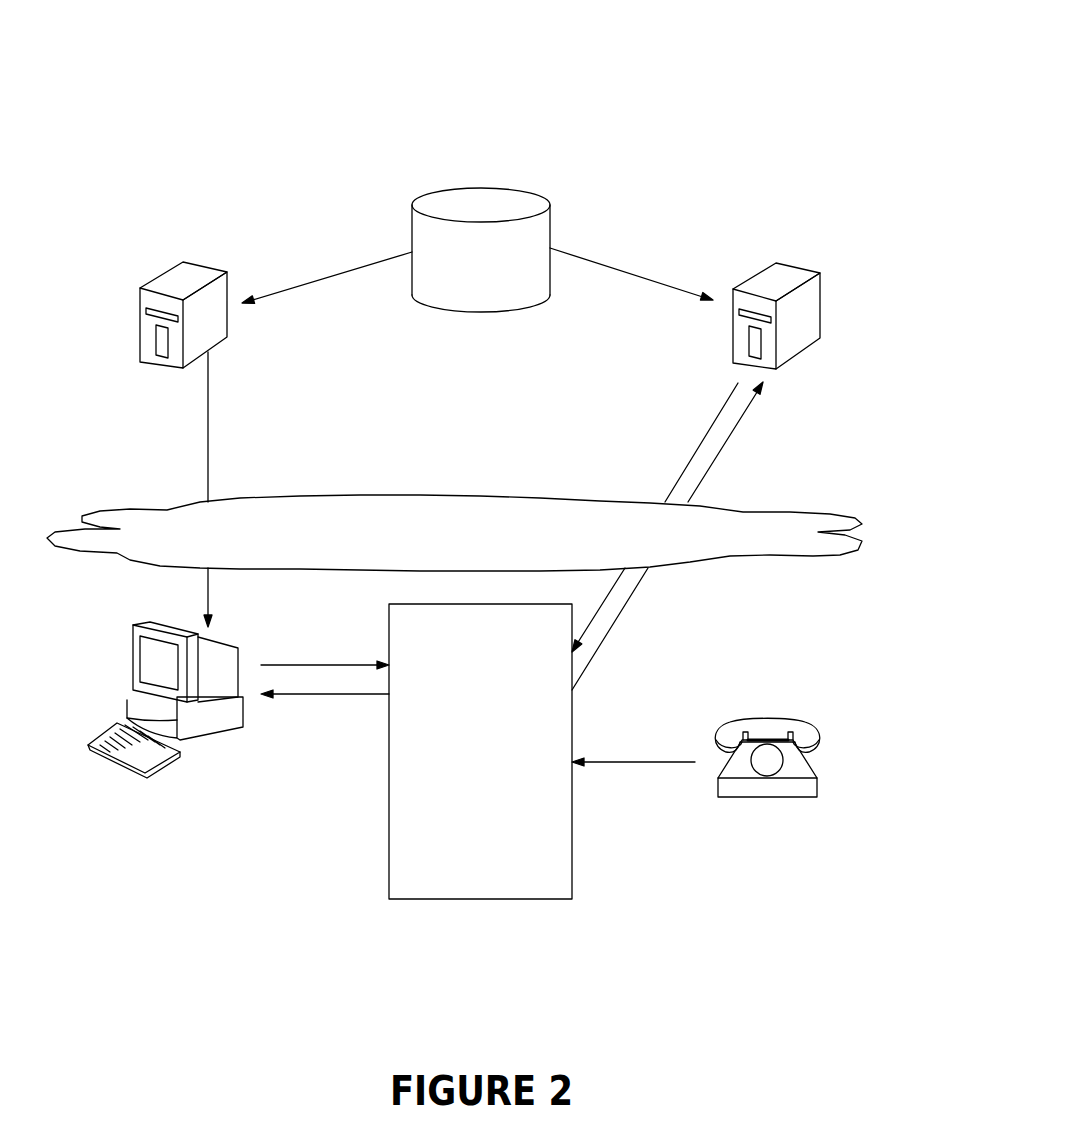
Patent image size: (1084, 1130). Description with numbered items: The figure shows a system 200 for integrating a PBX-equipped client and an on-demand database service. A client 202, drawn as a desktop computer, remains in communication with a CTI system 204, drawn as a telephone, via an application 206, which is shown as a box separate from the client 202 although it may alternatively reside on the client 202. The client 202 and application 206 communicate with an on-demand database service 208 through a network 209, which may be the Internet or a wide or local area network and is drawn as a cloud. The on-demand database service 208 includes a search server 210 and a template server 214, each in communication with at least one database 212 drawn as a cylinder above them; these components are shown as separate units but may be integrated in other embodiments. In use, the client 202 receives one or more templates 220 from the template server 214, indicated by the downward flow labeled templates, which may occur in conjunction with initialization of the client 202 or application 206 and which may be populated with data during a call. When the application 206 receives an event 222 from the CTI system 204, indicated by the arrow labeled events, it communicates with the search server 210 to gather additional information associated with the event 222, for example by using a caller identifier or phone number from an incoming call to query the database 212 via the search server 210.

The system 200 is at (832, 88).
The client 202 is at (223, 643).
The CTI system 204 is at (783, 718).
The application 206 is at (480, 751).
The on-demand database service 208 is at (563, 357).
The network 209 is at (454, 533).
The search server 210 is at (789, 261).
The database 212 is at (497, 188).
The template server 214 is at (192, 263).
The template 220 is at (131, 420).
The event 222 is at (641, 716).